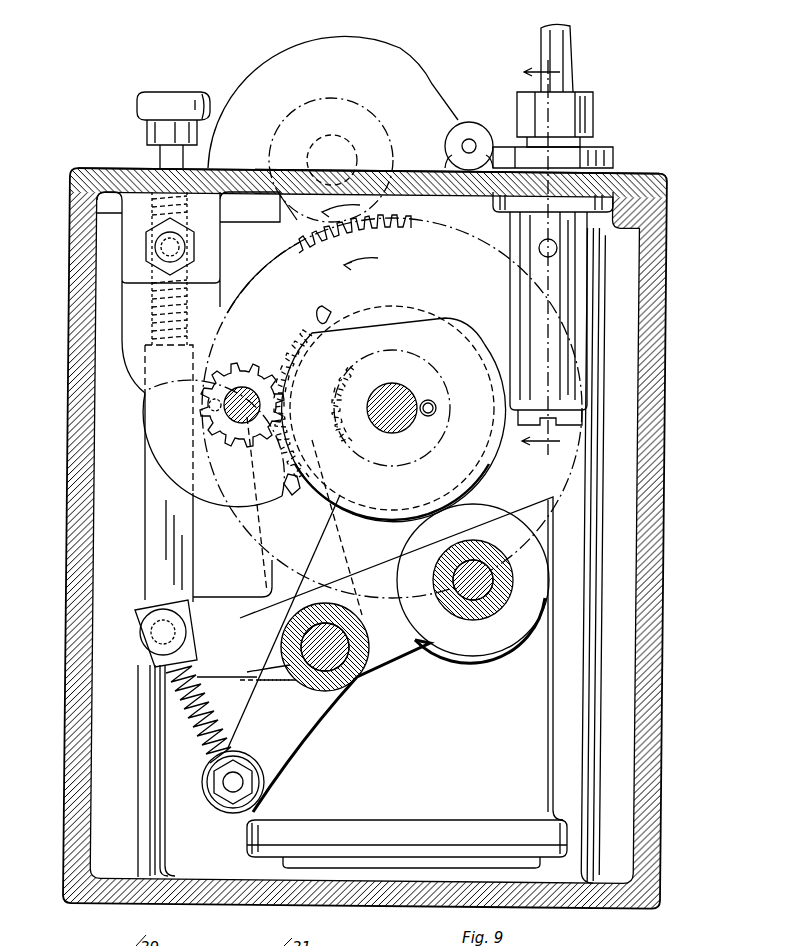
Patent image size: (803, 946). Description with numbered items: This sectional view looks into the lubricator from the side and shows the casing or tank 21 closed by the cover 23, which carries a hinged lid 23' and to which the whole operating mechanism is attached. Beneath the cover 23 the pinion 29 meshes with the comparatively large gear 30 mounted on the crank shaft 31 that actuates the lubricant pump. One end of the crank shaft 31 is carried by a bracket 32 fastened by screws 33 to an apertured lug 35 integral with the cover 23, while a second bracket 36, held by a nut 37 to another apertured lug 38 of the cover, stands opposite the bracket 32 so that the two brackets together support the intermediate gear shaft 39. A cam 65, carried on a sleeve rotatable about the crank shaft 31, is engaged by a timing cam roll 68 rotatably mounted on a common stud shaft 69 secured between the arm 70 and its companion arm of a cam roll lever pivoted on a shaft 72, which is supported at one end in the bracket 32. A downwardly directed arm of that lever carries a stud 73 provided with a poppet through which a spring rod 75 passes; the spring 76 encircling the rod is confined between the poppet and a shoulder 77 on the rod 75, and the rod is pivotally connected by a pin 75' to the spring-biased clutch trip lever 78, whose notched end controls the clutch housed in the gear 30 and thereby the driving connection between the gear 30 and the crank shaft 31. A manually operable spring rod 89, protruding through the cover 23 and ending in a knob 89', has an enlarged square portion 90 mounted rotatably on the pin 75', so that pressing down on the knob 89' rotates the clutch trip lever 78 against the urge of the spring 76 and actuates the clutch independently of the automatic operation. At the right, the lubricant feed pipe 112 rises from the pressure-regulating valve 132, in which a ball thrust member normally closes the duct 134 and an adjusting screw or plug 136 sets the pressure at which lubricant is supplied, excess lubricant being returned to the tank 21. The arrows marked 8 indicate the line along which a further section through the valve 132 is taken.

The casing or tank 21 is at (667, 383).
The cover 23 is at (364, 156).
The hinged lid 23' is at (350, 129).
The apertured lug 38 is at (97, 207).
The nut 37 is at (145, 247).
The second bracket 36 is at (122, 297).
The manually operable spring rod 89 is at (158, 144).
The knob 89' is at (162, 92).
The lubricant feed pipe 112 is at (573, 48).
The section line 8- 8 is at (531, 260).
The pressure regulating valve 132 is at (612, 162).
The duct 134 is at (538, 247).
The adjusting screw or plug 136 is at (582, 428).
The pinion 29 is at (380, 210).
The gear 30 is at (428, 228).
The cam 65 is at (400, 320).
The crank shaft 31 is at (399, 425).
The bracket 32 is at (360, 358).
The screws 33 is at (292, 497).
The intermediate gear shaft 39 is at (245, 385).
The apertured lug 35 is at (240, 432).
The enlarged extended square portion 90 is at (145, 480).
The pin or stud 75' is at (156, 634).
The shoulder 77 is at (200, 642).
The spring 76 is at (212, 674).
The spring rod 75 is at (198, 714).
The stud 73 is at (240, 790).
The shaft 72 is at (355, 674).
The arm 70 is at (408, 652).
The timing cam roll 68 is at (496, 640).
The common stud shaft 69 is at (490, 600).
The clutch trip lever 78 is at (272, 573).